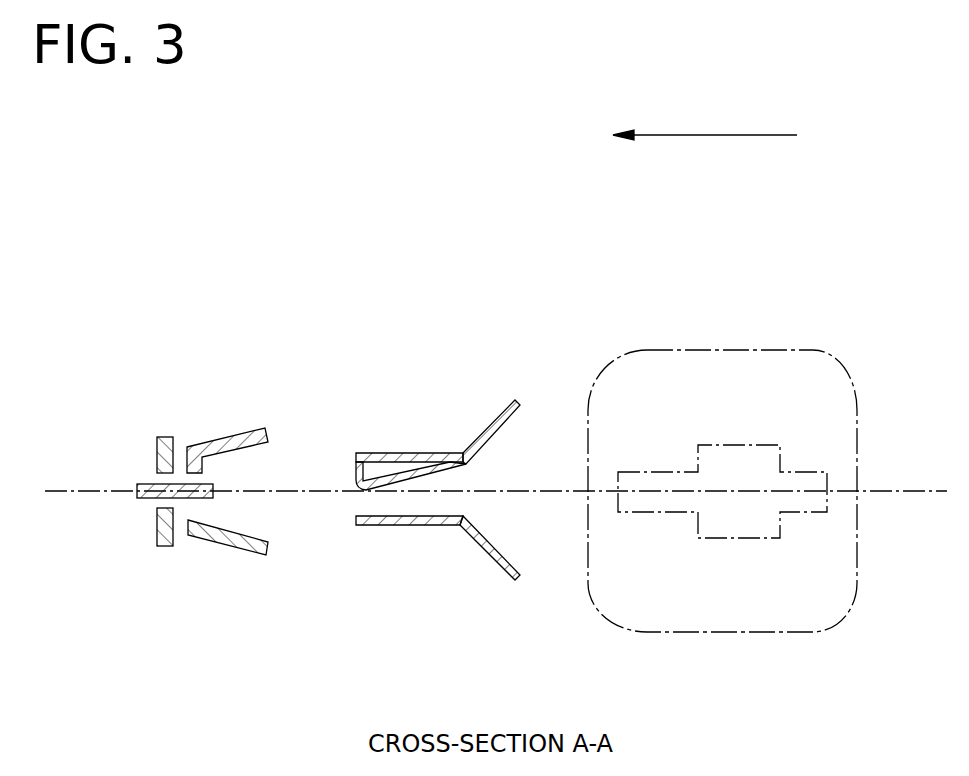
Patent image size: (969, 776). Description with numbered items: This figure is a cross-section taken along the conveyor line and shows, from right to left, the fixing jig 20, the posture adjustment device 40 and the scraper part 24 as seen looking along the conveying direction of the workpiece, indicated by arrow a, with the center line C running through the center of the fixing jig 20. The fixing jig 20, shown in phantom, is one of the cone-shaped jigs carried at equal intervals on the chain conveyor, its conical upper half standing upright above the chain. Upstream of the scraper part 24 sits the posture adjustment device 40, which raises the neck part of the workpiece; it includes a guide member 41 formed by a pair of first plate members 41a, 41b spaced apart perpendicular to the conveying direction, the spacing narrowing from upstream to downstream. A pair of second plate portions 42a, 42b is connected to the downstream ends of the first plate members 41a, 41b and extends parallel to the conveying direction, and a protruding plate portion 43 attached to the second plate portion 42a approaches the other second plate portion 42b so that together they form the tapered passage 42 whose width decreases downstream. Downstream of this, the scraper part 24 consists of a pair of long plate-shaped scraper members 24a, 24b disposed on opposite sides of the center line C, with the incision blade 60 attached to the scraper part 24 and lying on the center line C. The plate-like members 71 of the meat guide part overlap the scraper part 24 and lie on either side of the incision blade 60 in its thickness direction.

The fixing jig 20 is at (746, 349).
The scraper part 24 is at (178, 284).
The scraper member 24a is at (230, 433).
The scraper member 24b is at (222, 543).
The posture adjustment device 40 is at (443, 283).
The guide member 41 is at (507, 477).
The first plate member 41a is at (491, 424).
The first plate member 41b is at (494, 562).
The tapered passage 42 is at (441, 470).
The second plate portion 42a is at (398, 458).
The second plate portion 42b is at (398, 527).
The protruding plate portion 43 is at (370, 453).
The incision blade 60 is at (137, 492).
The plate-like member 71 is at (157, 450).
The conveying direction arrow a is at (710, 135).
The center line C is at (907, 490).